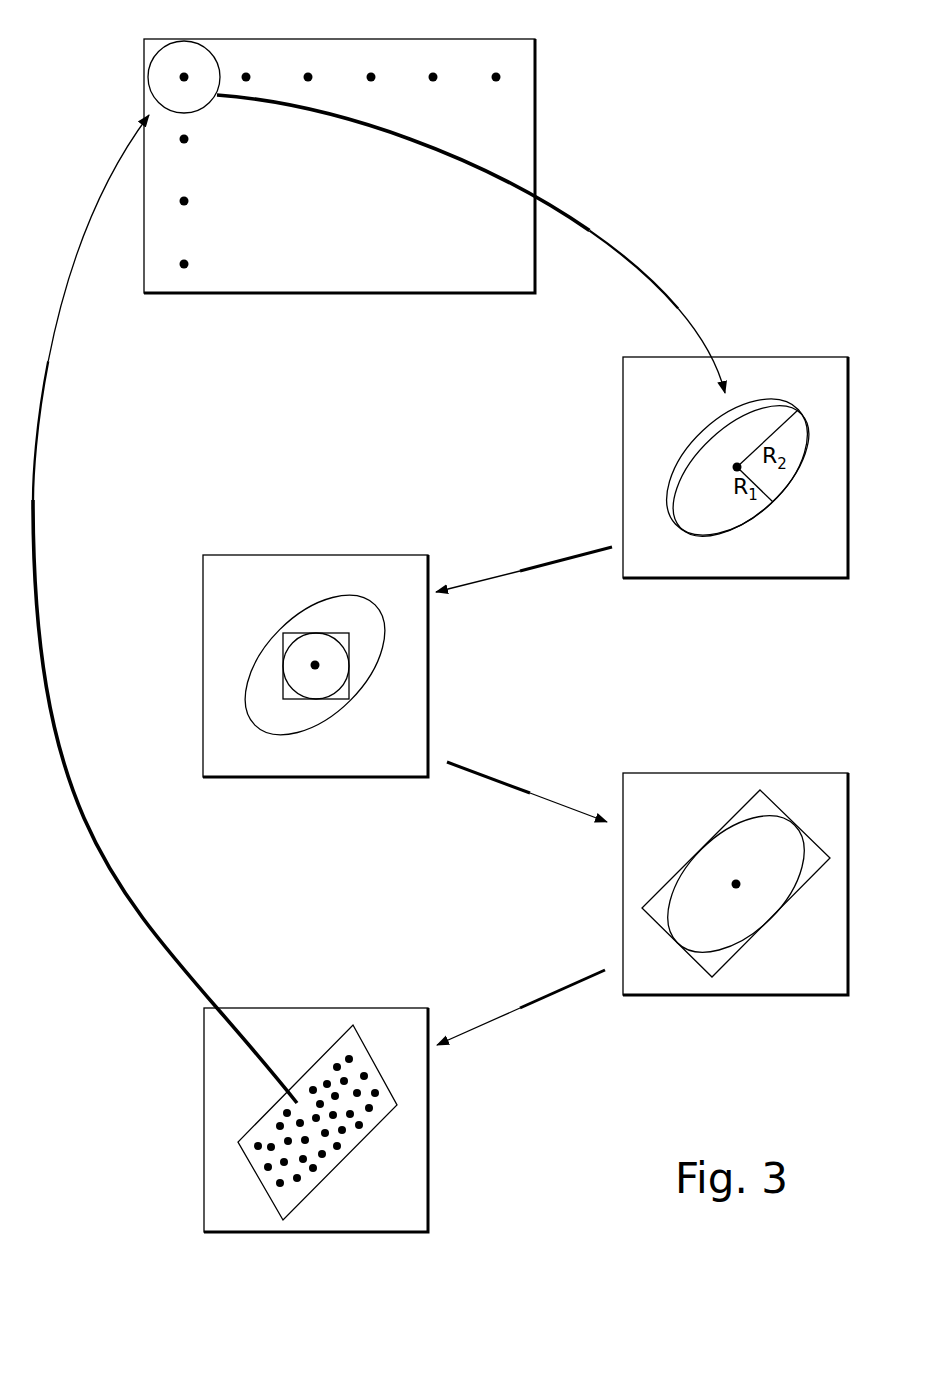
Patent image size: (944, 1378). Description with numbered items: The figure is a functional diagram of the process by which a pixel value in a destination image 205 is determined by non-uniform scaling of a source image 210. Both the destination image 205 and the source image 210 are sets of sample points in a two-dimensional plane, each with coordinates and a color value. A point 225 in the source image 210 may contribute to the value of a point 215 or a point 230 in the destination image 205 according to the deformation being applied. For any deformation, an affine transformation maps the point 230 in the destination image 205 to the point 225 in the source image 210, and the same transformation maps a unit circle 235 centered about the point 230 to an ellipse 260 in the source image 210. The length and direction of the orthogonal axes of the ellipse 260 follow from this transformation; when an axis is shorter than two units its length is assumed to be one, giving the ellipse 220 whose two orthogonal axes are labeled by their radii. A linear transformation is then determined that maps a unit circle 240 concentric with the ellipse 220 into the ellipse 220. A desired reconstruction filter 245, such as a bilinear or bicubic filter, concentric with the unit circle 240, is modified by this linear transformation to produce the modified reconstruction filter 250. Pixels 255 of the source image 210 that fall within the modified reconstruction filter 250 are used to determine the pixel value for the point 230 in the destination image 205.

The destination image 205 is at (535, 93).
The source image 210 is at (848, 405).
The point in the destination image 215 is at (311, 80).
The ellipse with axis length assumed to be one 220 is at (718, 418).
The point in the source image 225 is at (735, 470).
The point in the destination image 230 is at (178, 74).
The unit circle 235 is at (207, 107).
The unit circle 240 is at (292, 687).
The reconstruction filter 245 is at (306, 700).
The modified reconstruction filter 250 is at (665, 885).
The pixels of the source image 255 is at (266, 1170).
The ellipse 260 is at (710, 440).